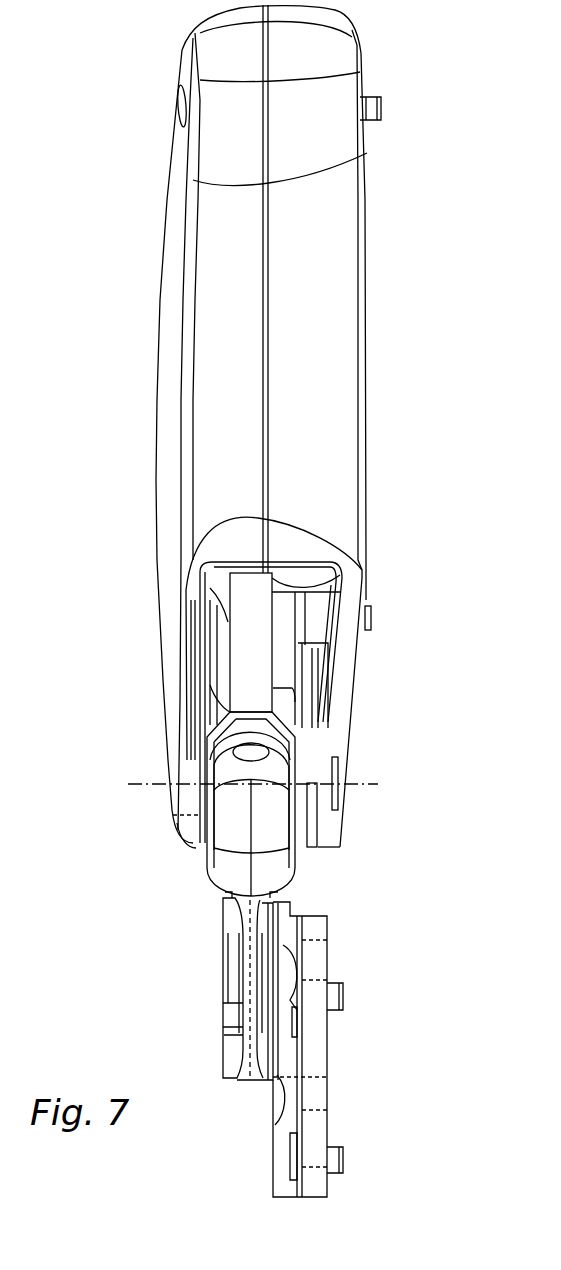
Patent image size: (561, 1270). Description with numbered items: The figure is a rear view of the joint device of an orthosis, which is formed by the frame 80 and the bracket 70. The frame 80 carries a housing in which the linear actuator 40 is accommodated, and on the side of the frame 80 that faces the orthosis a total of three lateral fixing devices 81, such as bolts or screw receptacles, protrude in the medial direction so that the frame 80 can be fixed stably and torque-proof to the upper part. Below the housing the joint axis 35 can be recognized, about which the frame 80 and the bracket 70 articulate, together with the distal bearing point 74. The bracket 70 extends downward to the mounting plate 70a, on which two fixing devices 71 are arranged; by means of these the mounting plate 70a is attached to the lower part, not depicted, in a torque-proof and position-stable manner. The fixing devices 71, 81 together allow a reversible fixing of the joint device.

The frame 80 is at (404, 404).
The fixing devices 81 is at (382, 108).
The linear actuator 40 is at (312, 590).
The joint axis 35 is at (352, 785).
The distal bearing point 74 is at (318, 817).
The bracket 70 is at (238, 1048).
The mounting plate 70a is at (315, 932).
The fixing devices 71 is at (345, 992).